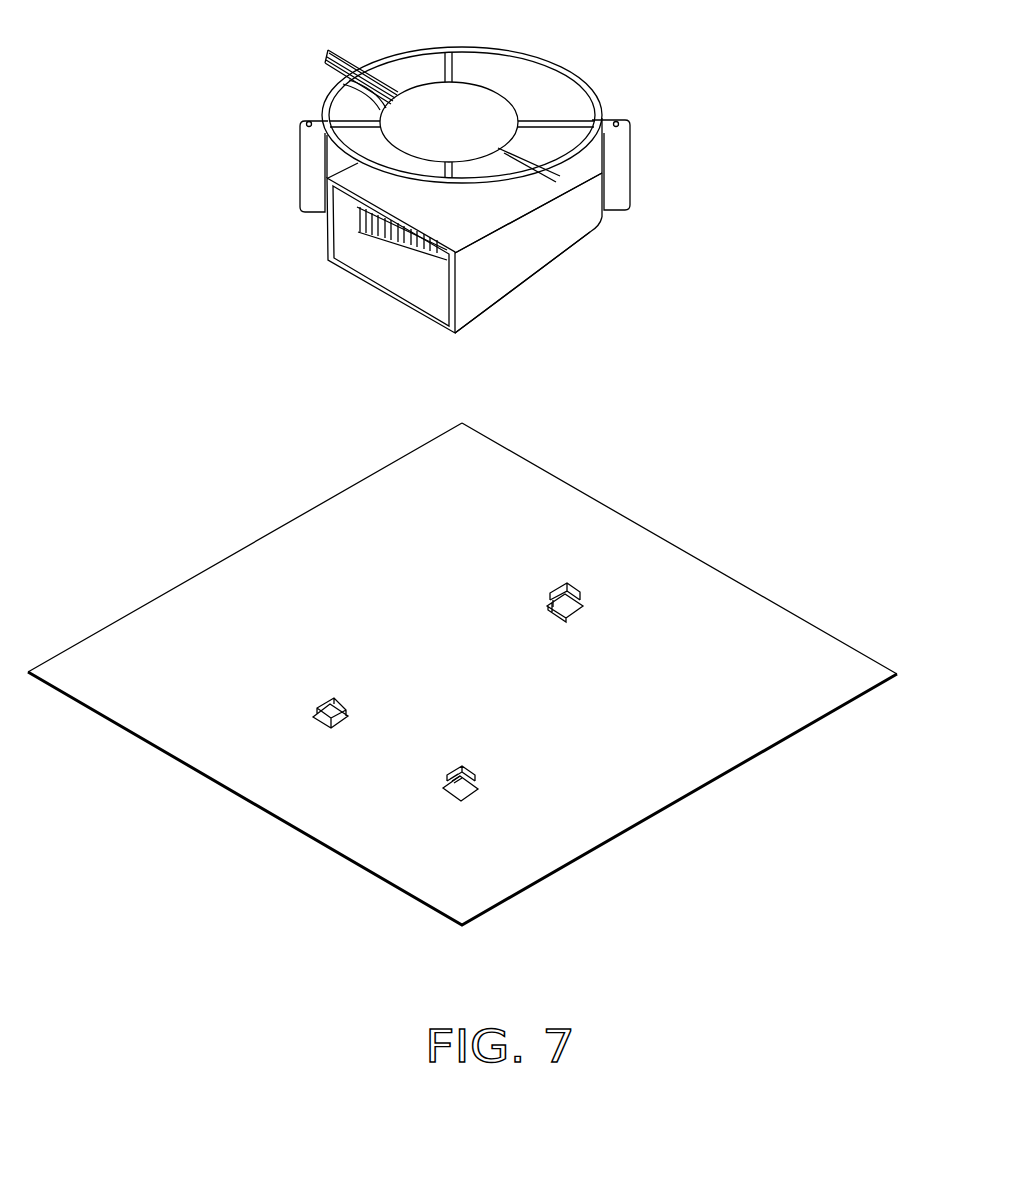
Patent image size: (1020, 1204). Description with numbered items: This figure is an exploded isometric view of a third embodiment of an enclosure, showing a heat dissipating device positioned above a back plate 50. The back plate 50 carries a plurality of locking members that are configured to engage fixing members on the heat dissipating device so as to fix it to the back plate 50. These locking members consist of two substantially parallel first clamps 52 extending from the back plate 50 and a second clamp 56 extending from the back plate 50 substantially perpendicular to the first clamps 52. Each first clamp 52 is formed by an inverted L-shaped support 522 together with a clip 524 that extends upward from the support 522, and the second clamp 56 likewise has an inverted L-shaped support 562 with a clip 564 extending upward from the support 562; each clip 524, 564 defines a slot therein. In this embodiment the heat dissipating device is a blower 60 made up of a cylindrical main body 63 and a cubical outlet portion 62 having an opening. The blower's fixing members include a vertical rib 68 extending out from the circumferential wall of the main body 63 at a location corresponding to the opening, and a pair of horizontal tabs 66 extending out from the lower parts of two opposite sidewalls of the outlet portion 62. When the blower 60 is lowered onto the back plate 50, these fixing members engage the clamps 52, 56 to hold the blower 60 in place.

The back plate 50 is at (262, 488).
The first clamp 52 is at (378, 865).
The inverted L-shaped support 522 is at (445, 787).
The clip 524 is at (457, 795).
The second clamp 56 is at (698, 553).
The inverted L-shaped support 562 is at (577, 608).
The clip 564 is at (573, 607).
The blower 60 is at (445, 197).
The outlet portion 62 is at (505, 268).
The main body 63 is at (590, 225).
The horizontal tab 66 is at (455, 332).
The vertical rib 68 is at (563, 73).